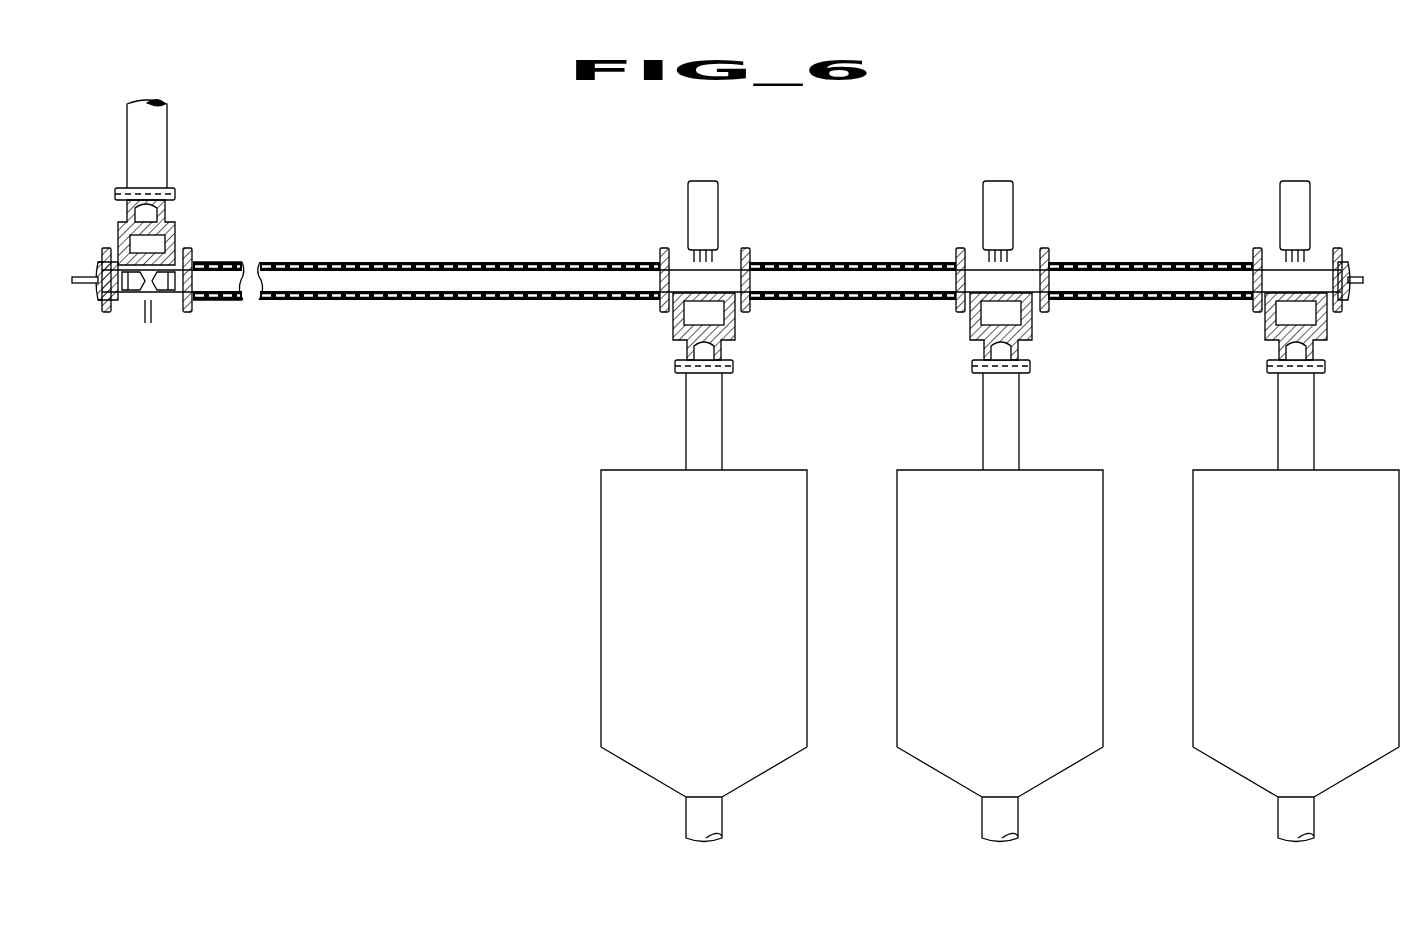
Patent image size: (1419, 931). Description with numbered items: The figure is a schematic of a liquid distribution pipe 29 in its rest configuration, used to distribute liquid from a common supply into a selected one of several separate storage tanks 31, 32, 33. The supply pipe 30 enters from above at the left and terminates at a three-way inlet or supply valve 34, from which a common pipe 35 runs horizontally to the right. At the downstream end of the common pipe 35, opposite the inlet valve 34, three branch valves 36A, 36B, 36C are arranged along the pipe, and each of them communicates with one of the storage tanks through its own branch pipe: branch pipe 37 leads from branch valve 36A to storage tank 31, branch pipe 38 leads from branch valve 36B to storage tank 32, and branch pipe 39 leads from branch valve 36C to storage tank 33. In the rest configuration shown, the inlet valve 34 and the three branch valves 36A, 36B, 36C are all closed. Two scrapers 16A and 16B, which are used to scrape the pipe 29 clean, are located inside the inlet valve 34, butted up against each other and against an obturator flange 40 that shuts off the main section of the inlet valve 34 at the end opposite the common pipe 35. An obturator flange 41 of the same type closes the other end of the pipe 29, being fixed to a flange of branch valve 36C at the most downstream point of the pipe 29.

The scraper 16A is at (169, 301).
The scraper 16B is at (128, 301).
The liquid distribution pipe 29 is at (427, 256).
The supply pipe 30 is at (168, 145).
The storage tank 31 is at (708, 621).
The storage tank 32 is at (1005, 621).
The storage tank 33 is at (1280, 621).
The three-way inlet valve 34 is at (176, 229).
The common pipe 35 is at (300, 301).
The branch valve 36A is at (673, 326).
The branch valve 36B is at (972, 326).
The branch valve 36C is at (1267, 326).
The branch pipe 37 is at (688, 429).
The branch pipe 38 is at (984, 429).
The branch pipe 39 is at (1279, 431).
The obturator flange 40 is at (103, 262).
The obturator flange 41 is at (1349, 318).